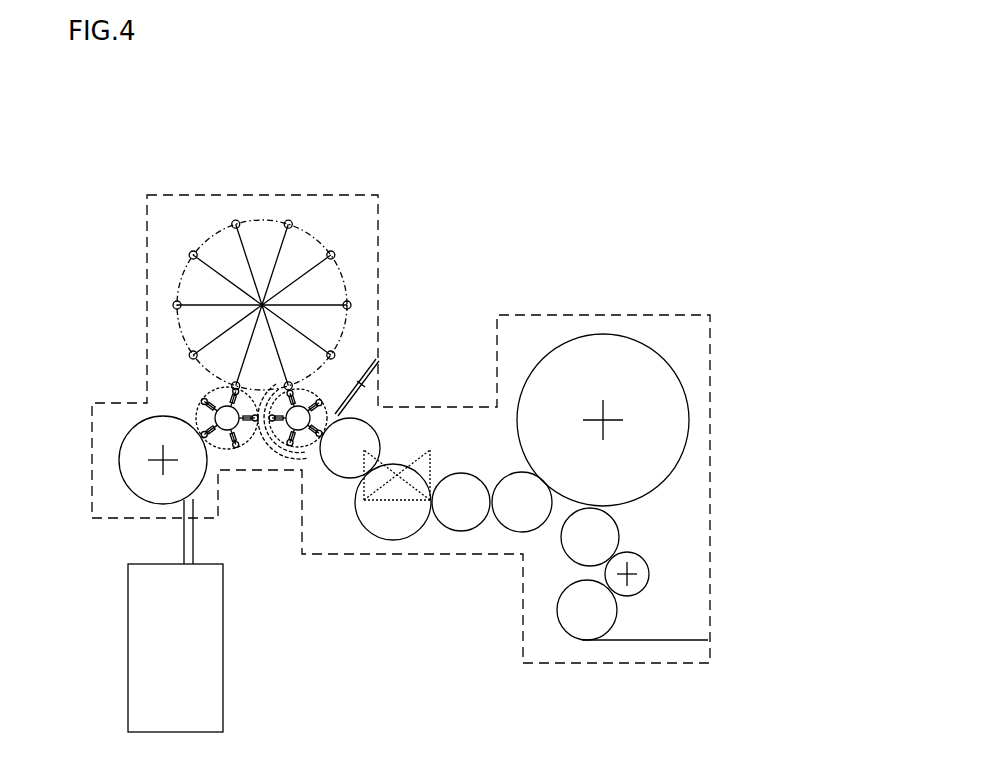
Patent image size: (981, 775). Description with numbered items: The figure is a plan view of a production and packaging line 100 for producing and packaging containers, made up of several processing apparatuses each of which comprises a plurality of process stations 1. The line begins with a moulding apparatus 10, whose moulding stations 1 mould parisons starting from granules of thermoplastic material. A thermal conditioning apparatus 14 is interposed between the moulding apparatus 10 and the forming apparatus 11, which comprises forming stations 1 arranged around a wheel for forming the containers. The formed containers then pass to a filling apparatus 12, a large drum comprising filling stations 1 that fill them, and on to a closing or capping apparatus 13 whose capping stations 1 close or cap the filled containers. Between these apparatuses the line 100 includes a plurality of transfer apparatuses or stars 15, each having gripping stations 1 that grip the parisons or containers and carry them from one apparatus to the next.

The production and packaging line 100 is at (603, 182).
The forming apparatus 11 is at (267, 212).
The process station 1 is at (236, 219).
The thermal conditioning apparatus 14 is at (112, 460).
The moulding apparatus 10 is at (184, 655).
The transfer star 15 is at (628, 522).
The filling apparatus 12 is at (641, 334).
The closing or capping apparatus 13 is at (651, 553).